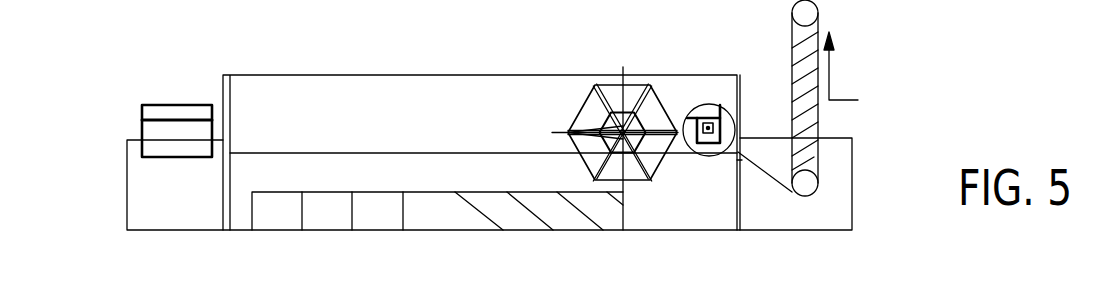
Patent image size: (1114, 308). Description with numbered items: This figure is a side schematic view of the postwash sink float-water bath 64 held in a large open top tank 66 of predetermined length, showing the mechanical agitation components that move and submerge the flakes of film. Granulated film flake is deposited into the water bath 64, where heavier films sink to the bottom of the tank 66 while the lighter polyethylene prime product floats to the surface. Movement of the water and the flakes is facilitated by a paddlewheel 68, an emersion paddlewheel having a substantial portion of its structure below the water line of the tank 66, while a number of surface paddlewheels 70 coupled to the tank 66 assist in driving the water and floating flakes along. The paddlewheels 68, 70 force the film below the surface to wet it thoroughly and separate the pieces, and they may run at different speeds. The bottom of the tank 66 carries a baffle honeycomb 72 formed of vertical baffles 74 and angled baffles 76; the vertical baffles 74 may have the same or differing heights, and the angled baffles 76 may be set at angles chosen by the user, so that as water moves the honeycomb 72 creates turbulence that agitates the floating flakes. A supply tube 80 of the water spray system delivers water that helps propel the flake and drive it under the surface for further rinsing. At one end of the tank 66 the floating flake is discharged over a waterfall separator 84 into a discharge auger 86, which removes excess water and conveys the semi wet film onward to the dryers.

The postwash sink float-water bath 64 is at (887, 79).
The tank 66 is at (852, 182).
The paddlewheel 68 is at (640, 92).
The surface paddlewheels 70 is at (175, 103).
The baffle honeycomb 72 is at (298, 239).
The vertical baffles 74 is at (353, 231).
The angled baffles 76 is at (505, 231).
The supply tube 80 is at (845, 98).
The waterfall separator 84 is at (733, 152).
The discharge auger 86 is at (818, 115).